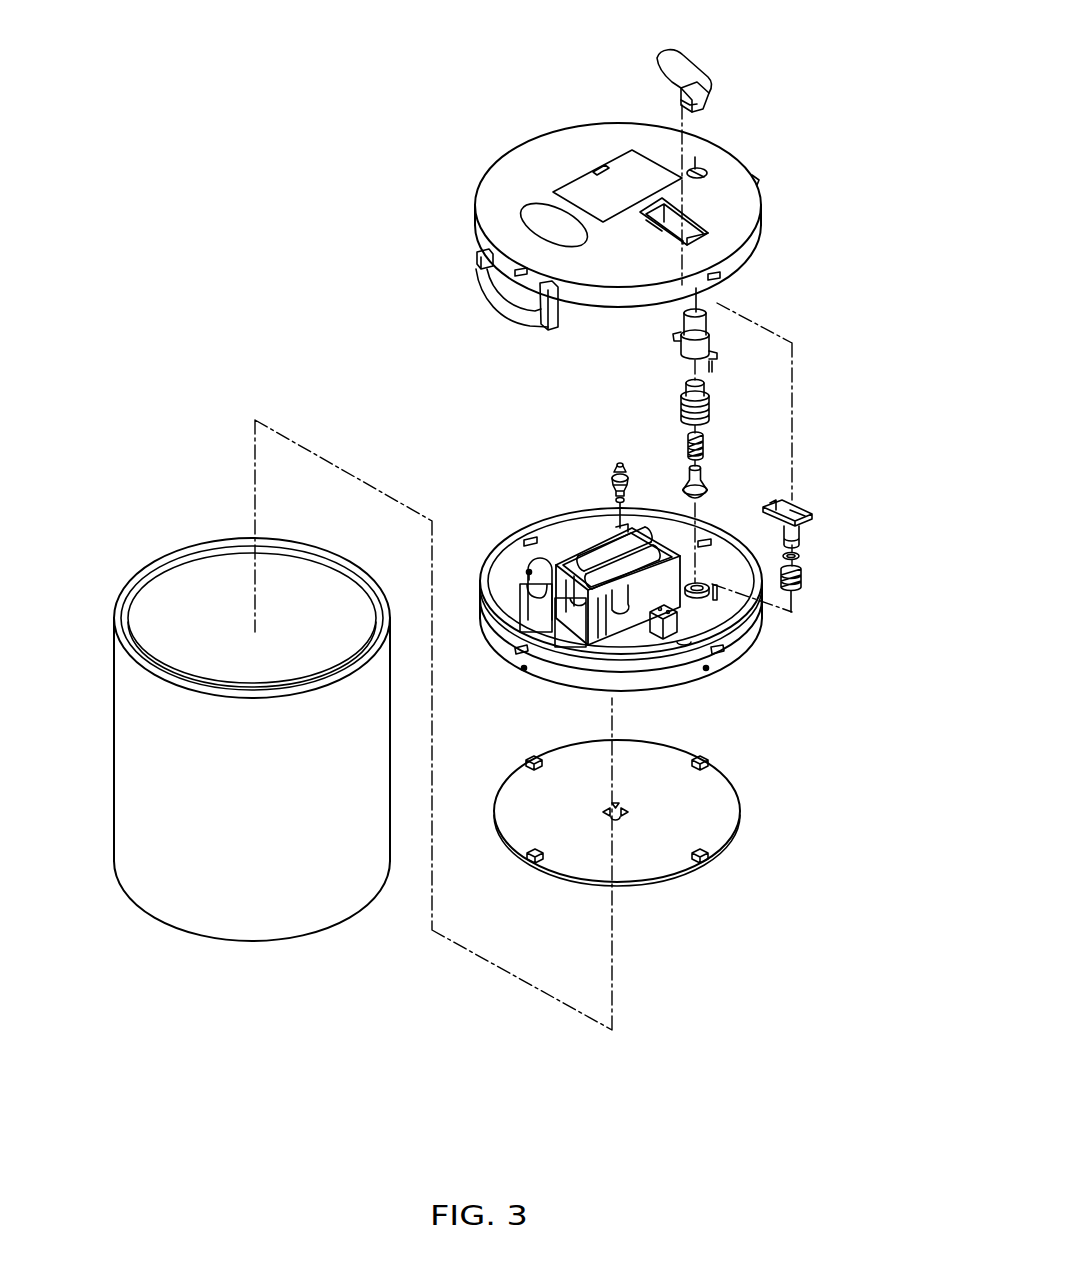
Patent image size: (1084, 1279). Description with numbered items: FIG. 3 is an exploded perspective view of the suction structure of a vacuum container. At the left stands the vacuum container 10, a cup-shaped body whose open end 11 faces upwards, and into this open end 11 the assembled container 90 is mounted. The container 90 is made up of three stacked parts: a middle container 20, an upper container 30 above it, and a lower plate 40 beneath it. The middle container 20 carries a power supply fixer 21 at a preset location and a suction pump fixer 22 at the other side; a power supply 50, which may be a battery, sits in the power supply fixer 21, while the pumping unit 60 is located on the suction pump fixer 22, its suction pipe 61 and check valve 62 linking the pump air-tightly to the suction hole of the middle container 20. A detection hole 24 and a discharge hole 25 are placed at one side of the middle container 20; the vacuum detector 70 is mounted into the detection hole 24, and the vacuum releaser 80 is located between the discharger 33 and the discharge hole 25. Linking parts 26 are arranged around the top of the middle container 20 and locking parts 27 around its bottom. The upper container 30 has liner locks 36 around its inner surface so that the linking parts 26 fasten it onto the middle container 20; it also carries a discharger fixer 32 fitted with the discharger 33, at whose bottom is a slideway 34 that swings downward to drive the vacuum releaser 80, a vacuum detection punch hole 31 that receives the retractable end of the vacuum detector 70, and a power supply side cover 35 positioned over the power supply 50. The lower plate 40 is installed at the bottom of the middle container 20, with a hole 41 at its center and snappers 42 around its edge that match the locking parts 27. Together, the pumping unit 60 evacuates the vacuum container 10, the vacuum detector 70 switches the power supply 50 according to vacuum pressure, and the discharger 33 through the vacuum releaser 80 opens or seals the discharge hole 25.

The vacuum container 10 is at (145, 744).
The open end 11 is at (203, 596).
The middle container 20 is at (750, 620).
The power supply fixer 21 is at (556, 550).
The suction pump fixer 22 is at (527, 572).
The detection hole 24 is at (701, 583).
The discharge hole 25 is at (684, 646).
The linking parts 26 is at (722, 649).
The locking parts 27 is at (524, 669).
The upper container 30 is at (610, 135).
The vacuum detection punch hole 31 is at (700, 170).
The discharger fixer 32 is at (697, 222).
The discharger 33 is at (692, 73).
The slideway 34 is at (698, 109).
The power supply side cover 35 is at (600, 193).
The liner locks 36 is at (518, 273).
The lower plate 40 is at (693, 818).
The hole 41 is at (615, 819).
The snappers 42 is at (530, 757).
The power supply 50 is at (590, 540).
The pumping unit 60 is at (553, 552).
The suction pipe 61 is at (615, 533).
The check valve 62 is at (620, 462).
The vacuum detector 70 is at (727, 313).
The vacuum releaser 80 is at (822, 496).
The container 90 is at (846, 38).